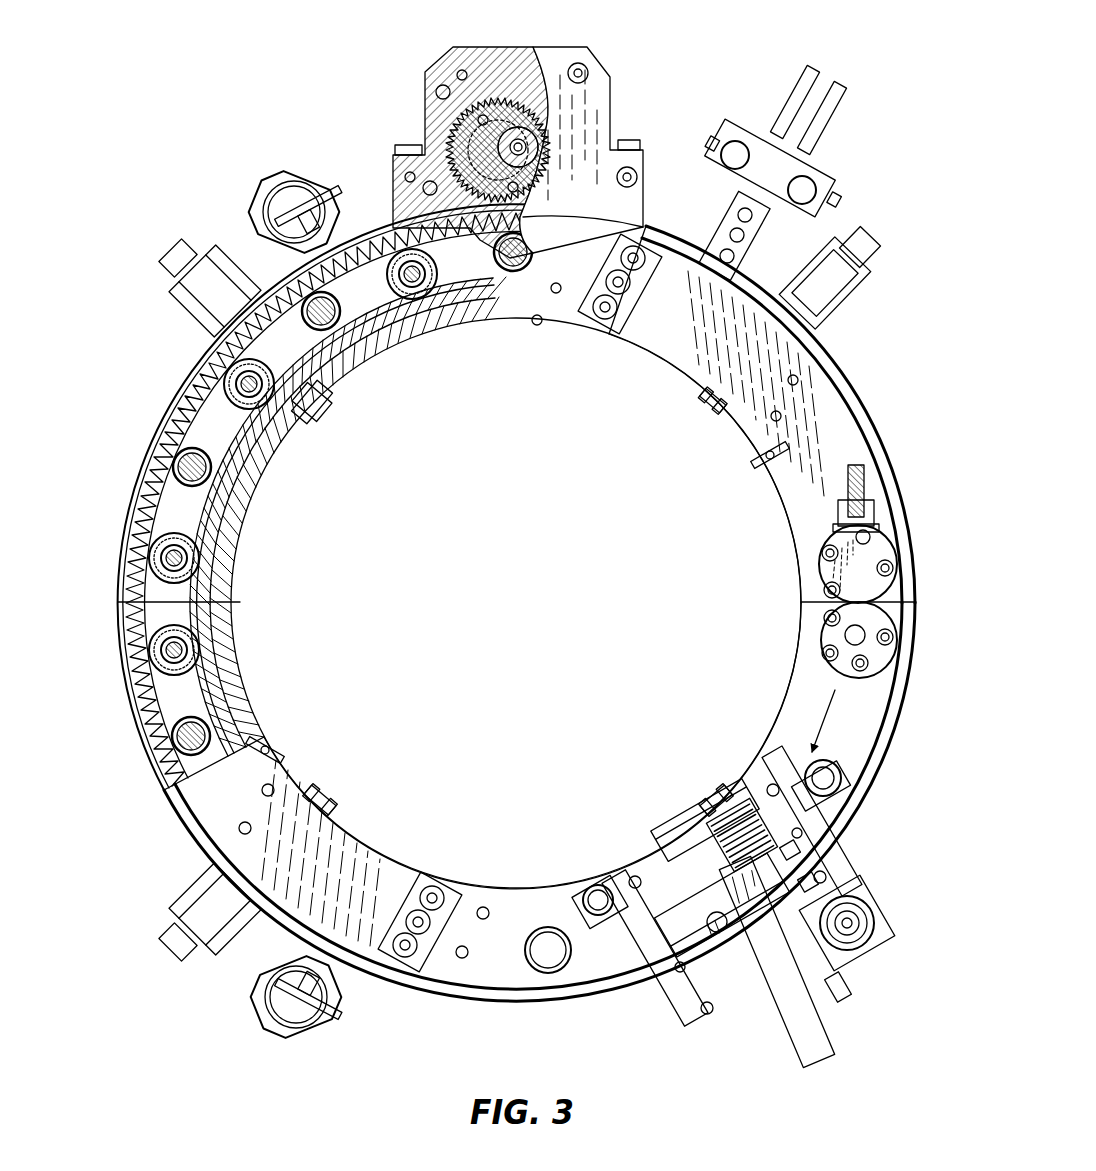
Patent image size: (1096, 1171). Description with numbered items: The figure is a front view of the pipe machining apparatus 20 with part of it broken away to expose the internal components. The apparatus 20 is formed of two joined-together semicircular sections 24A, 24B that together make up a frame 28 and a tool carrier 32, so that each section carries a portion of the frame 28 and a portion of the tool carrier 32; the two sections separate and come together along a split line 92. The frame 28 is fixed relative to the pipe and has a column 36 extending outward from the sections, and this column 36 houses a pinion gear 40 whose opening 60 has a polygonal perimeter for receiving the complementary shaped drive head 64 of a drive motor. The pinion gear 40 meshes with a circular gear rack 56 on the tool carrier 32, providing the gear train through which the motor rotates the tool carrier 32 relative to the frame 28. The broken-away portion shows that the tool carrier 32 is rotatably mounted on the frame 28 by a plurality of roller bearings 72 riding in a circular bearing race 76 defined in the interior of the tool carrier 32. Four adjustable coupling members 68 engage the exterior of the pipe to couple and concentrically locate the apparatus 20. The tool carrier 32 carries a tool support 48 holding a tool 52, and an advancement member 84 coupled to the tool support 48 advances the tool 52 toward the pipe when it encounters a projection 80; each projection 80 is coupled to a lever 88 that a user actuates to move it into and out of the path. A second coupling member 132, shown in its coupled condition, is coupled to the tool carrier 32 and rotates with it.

The pipe machining apparatus 20 is at (936, 172).
The semicircular section 24A is at (862, 373).
The semicircular section 24B is at (902, 770).
The frame 28 is at (126, 522).
The tool carrier 32 is at (835, 437).
The column 36 is at (600, 47).
The pinion gear 40 is at (470, 153).
The tool support 48 is at (722, 1048).
The tool 52 is at (682, 826).
The circular gear rack 56 is at (215, 392).
The opening 60 is at (475, 145).
The drive head 64 is at (453, 167).
The coupling member 68 is at (893, 267).
The roller bearing 72 is at (250, 360).
The circular bearing race 76 is at (212, 610).
The projection 80 is at (737, 148).
The advancement member 84 is at (878, 915).
The lever 88 is at (803, 66).
The split line 92 is at (160, 610).
The second coupling member 132 is at (806, 595).